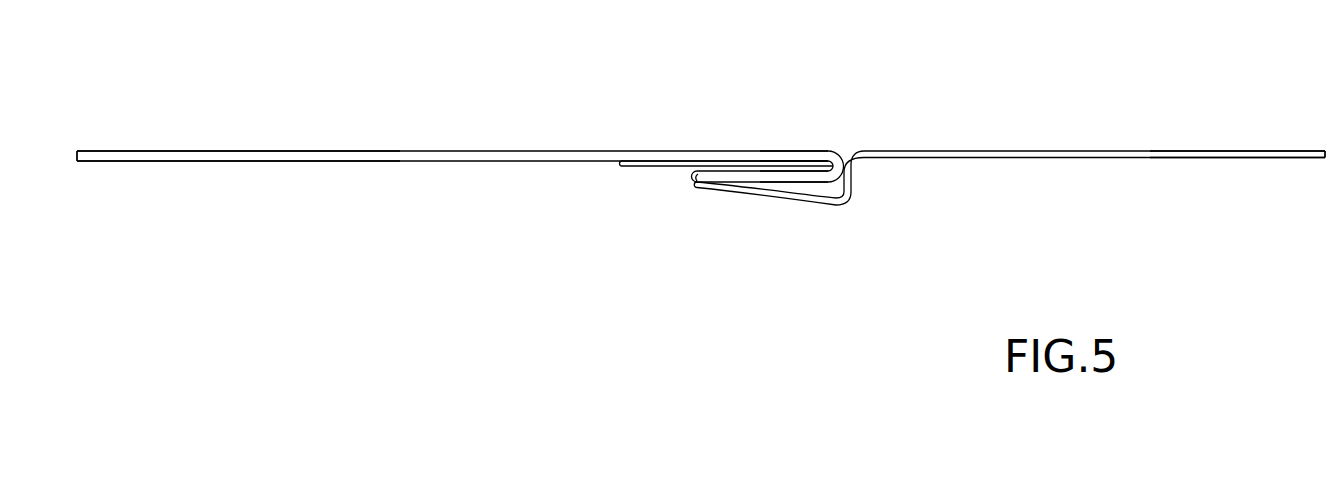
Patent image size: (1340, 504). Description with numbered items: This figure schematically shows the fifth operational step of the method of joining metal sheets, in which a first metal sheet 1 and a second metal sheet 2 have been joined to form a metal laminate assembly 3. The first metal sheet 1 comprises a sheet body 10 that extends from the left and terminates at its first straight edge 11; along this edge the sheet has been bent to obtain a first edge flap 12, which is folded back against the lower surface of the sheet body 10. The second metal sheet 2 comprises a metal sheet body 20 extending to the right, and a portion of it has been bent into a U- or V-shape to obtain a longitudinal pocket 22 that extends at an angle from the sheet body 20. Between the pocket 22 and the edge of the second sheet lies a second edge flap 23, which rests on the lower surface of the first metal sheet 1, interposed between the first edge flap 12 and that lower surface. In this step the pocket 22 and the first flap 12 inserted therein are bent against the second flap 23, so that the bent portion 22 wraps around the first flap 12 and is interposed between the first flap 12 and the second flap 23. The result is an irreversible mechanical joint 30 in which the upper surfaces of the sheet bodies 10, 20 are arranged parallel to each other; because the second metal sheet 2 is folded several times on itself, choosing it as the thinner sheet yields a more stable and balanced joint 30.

The first metal sheet 1 is at (387, 128).
The second metal sheet 2 is at (1058, 138).
The metal laminate assembly 3 is at (790, 120).
The sheet body 10 is at (287, 163).
The first straight edge 11 is at (690, 184).
The first edge flap 12 is at (733, 186).
The metal sheet body 20 is at (1228, 158).
The longitudinal pocket 22 is at (795, 212).
The second edge flap 23 is at (630, 167).
The joint 30 is at (860, 200).